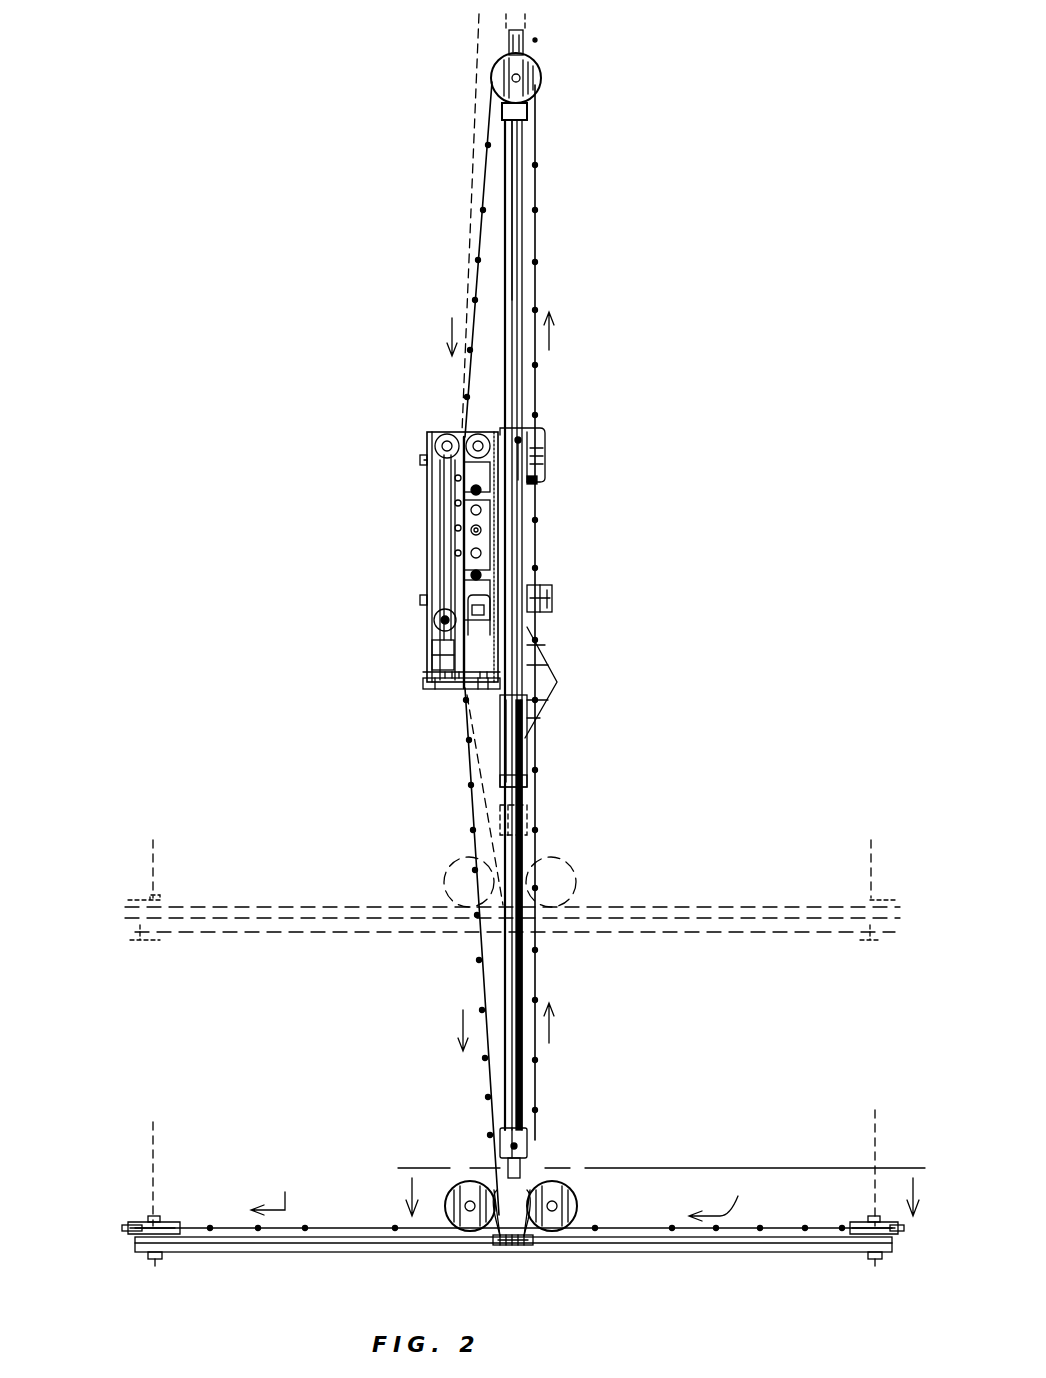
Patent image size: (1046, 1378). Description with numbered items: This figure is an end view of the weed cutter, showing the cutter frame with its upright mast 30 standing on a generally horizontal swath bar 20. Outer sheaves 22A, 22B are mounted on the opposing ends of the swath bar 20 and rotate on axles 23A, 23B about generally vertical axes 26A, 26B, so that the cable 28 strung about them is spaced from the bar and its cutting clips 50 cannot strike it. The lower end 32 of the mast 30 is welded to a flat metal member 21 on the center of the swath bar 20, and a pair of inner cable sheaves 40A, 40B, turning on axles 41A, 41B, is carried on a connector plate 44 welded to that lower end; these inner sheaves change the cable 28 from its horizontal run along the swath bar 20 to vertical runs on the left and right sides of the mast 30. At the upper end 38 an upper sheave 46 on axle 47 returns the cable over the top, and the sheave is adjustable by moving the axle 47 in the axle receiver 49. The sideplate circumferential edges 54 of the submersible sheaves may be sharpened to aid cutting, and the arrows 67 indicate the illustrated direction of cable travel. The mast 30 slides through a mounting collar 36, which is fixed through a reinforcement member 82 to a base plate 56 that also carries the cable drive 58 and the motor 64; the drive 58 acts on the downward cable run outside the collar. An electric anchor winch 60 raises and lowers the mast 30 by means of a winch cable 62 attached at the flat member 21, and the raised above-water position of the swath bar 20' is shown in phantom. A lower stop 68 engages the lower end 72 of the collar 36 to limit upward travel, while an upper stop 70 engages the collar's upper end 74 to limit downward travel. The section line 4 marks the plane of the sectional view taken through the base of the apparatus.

The swath bar 20 is at (513, 1270).
The swath bar in raised phantom position 20' is at (512, 937).
The flat metal member 21 is at (526, 1246).
The outer sheave 22A is at (175, 1224).
The outer sheave 22B is at (870, 1222).
The axle 23A is at (155, 1262).
The axle 23B is at (872, 1262).
The vertical axis 26A is at (153, 852).
The vertical axis 26B is at (871, 852).
The cable 28 is at (470, 787).
The upright mast 30 is at (513, 232).
The lower end of mast 32 is at (520, 1170).
The mounting collar 36 is at (512, 755).
The upper end of mast 38 is at (523, 138).
The inner cable sheave 40A is at (462, 1222).
The inner cable sheave 40B is at (565, 1183).
The axle 41A is at (466, 1208).
The axle 41B is at (557, 1206).
The connector plate 44 is at (490, 1246).
The upper sheave 46 is at (540, 72).
The axle 47 is at (512, 78).
The axle receiver 49 is at (523, 42).
The cutting clips 50 is at (537, 263).
The sideplate circumferential edges 54 is at (125, 1228).
The base plate 56 is at (430, 686).
The cable drive 58 is at (440, 527).
The electric anchor winch 60 is at (545, 428).
The winch cable 62 is at (515, 1085).
The motor 64 is at (548, 592).
The cable travel direction 67 is at (452, 322).
The lower stop 68 is at (522, 1140).
The upper stop 70 is at (527, 112).
The lower end of collar 72 is at (522, 778).
The upper end of collar 74 is at (520, 445).
The reinforcement member 82 is at (552, 683).
The section line 4- 4 is at (661, 1174).